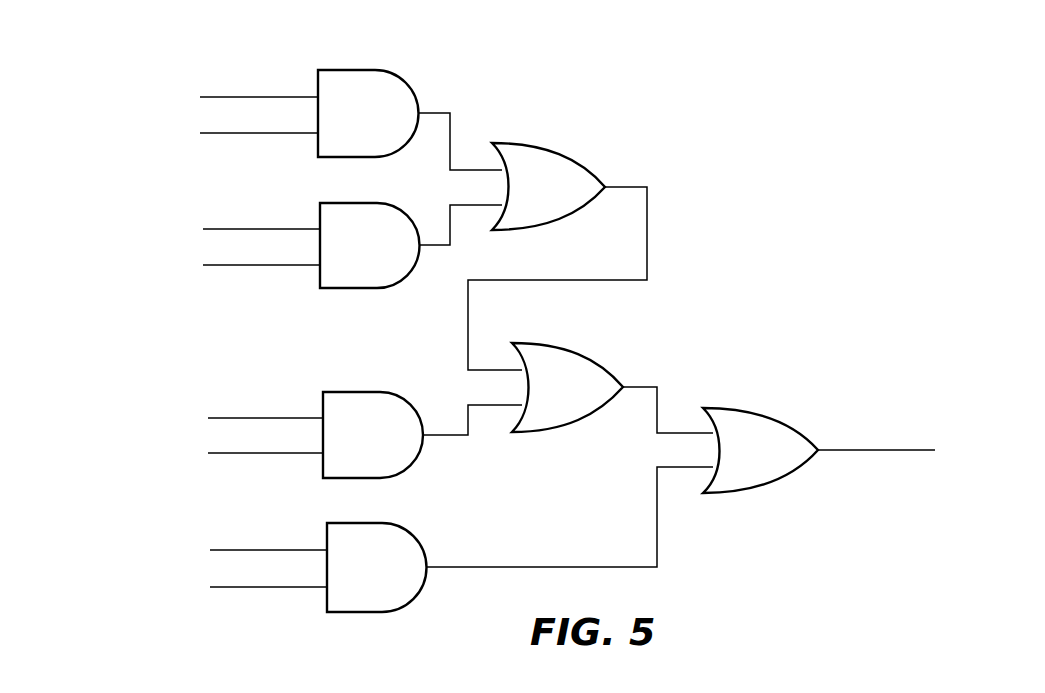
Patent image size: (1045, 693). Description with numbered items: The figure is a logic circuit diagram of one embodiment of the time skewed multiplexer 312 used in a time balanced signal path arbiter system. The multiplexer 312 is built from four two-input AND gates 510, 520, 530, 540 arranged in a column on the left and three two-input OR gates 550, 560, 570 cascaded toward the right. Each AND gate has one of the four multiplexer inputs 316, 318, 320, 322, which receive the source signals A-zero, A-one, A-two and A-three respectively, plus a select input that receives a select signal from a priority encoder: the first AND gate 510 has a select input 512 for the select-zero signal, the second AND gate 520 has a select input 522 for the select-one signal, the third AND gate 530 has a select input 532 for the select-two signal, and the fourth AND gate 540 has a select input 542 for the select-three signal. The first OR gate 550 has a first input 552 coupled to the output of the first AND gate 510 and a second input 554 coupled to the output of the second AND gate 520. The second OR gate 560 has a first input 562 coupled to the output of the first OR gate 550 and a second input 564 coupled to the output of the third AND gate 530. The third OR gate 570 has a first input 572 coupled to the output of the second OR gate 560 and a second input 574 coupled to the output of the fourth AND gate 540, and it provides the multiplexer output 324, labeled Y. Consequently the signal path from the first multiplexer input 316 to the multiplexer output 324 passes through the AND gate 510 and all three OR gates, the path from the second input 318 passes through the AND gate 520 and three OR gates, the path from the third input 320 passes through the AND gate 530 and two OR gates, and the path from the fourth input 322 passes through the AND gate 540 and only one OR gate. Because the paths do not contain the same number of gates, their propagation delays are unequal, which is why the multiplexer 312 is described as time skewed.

The time skewed multiplexer 312 is at (769, 84).
The first multiplexer input 316 is at (290, 96).
The second multiplexer input 318 is at (279, 228).
The third multiplexer input 320 is at (296, 417).
The fourth multiplexer input 322 is at (284, 549).
The multiplexer output 324 is at (851, 453).
The first AND gate 510 is at (409, 84).
The select input 512 is at (291, 132).
The second AND gate 520 is at (346, 202).
The select input 522 is at (294, 264).
The third AND gate 530 is at (371, 391).
The select input 532 is at (298, 452).
The fourth AND gate 540 is at (408, 531).
The select input 542 is at (301, 586).
The first OR gate 550 is at (565, 142).
The first input 552 is at (481, 168).
The second input 554 is at (477, 207).
The second OR gate 560 is at (585, 342).
The first input 562 is at (499, 368).
The second input 564 is at (503, 408).
The third OR gate 570 is at (778, 407).
The first input 572 is at (690, 431).
The second input 574 is at (700, 469).